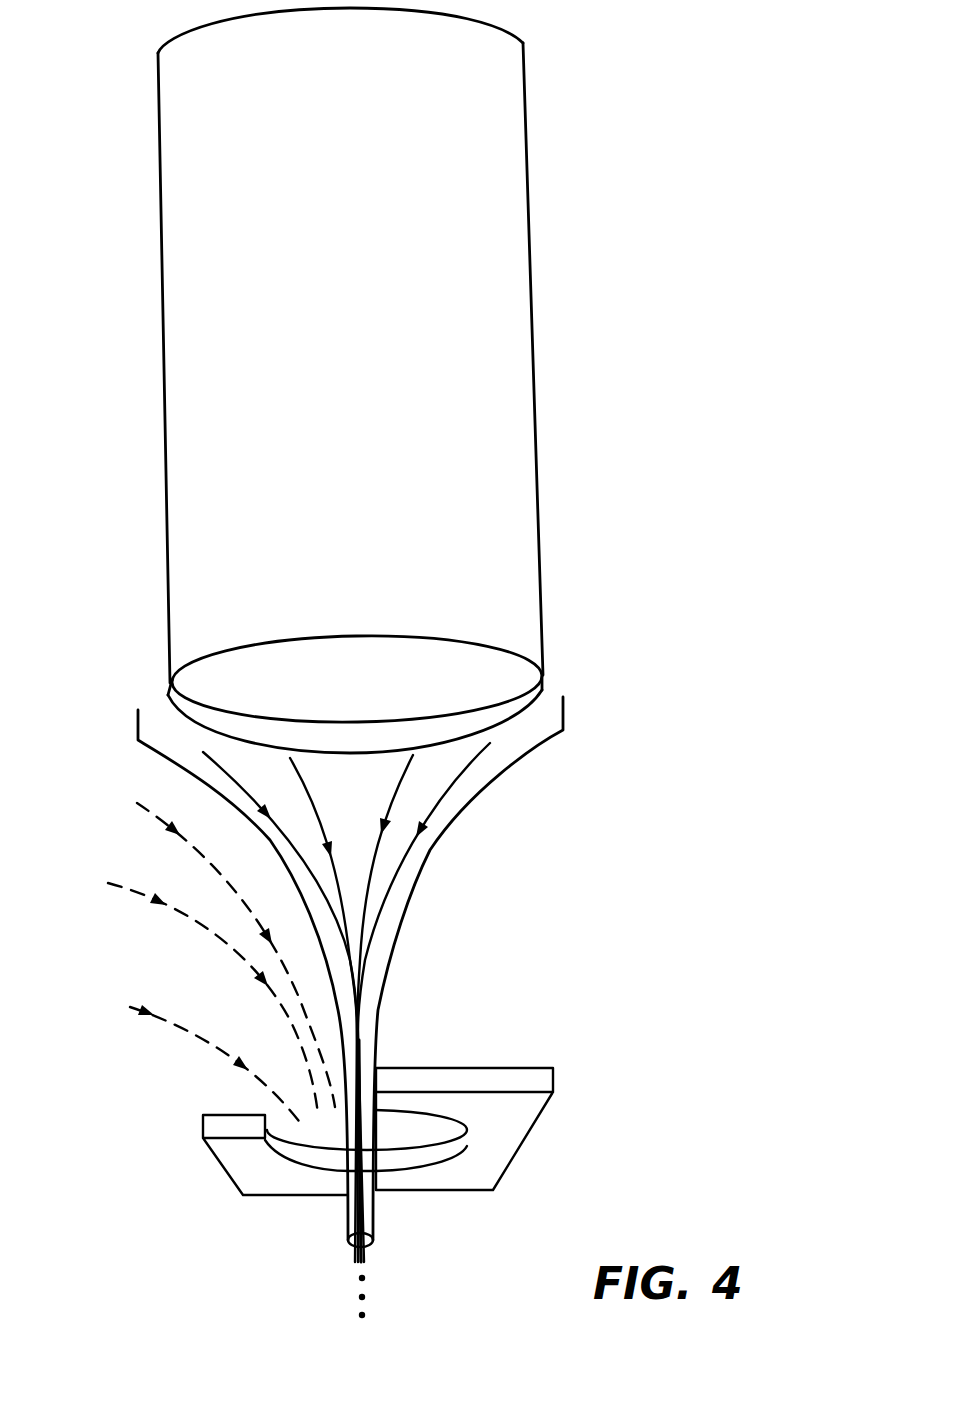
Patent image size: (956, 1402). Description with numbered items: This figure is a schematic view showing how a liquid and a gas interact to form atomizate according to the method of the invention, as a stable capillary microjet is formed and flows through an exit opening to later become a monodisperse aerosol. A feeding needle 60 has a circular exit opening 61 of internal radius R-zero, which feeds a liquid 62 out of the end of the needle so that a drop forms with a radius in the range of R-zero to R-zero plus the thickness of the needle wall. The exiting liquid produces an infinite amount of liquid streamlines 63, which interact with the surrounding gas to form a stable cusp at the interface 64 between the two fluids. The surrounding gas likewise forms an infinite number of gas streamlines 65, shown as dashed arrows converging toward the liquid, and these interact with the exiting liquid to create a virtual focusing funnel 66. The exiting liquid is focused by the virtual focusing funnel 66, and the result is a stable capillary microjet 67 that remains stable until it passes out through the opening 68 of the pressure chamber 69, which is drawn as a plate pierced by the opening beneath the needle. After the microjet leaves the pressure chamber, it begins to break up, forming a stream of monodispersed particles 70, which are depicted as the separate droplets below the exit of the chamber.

The feeding needle 60 is at (535, 468).
The circular exit opening 61 is at (498, 682).
The liquid 62 is at (330, 673).
The liquid streamlines 63 is at (397, 897).
The interface 64 is at (397, 928).
The gas streamlines 65 is at (113, 1000).
The virtual focusing funnel 66 is at (380, 1032).
The stable capillary microjet 67 is at (367, 985).
The opening 68 is at (443, 1128).
The pressure chamber 69 is at (523, 1068).
The monodispersed particles 70 is at (363, 1297).